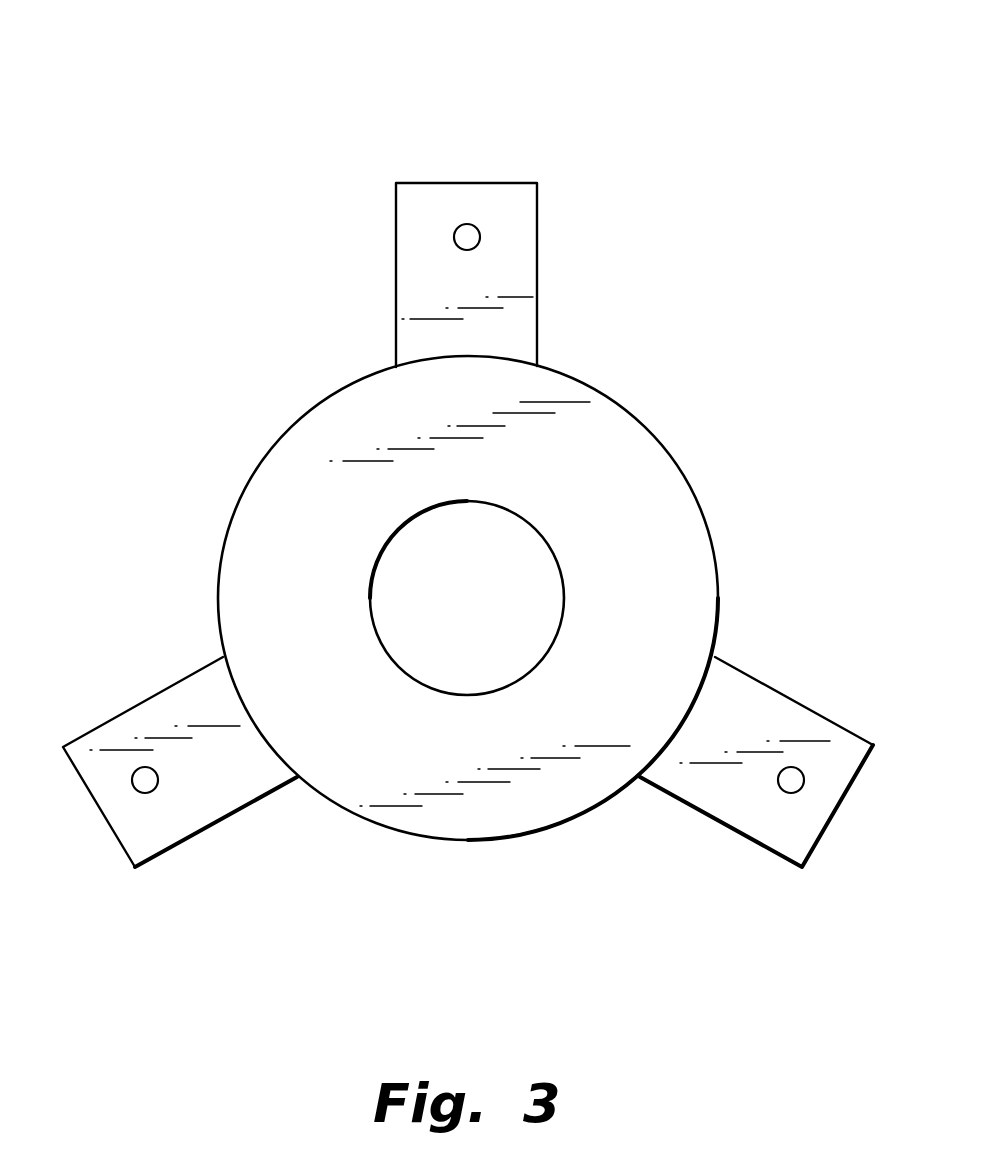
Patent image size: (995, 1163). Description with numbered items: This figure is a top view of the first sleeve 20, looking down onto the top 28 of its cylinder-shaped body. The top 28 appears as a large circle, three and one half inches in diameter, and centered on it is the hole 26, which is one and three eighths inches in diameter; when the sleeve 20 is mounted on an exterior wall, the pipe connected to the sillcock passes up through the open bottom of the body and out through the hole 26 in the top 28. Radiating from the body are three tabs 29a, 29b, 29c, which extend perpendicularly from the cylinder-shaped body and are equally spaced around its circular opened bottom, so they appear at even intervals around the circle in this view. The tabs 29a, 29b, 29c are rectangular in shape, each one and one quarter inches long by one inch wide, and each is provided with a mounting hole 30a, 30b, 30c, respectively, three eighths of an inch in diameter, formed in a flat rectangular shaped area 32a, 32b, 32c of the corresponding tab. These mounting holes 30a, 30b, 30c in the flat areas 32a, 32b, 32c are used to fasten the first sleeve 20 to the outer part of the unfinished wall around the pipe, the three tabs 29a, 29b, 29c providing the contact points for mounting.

The first sleeve 20 is at (98, 74).
The hole 26 is at (563, 568).
The top 28 is at (684, 462).
The tab 29a is at (110, 690).
The tab 29b is at (382, 168).
The tab 29c is at (834, 684).
The mounting hole 30a is at (158, 787).
The mounting hole 30b is at (453, 238).
The mounting hole 30c is at (803, 783).
The flat rectangular shaped area 32a is at (123, 825).
The flat rectangular shaped area 32b is at (510, 265).
The flat rectangular shaped area 32c is at (722, 803).